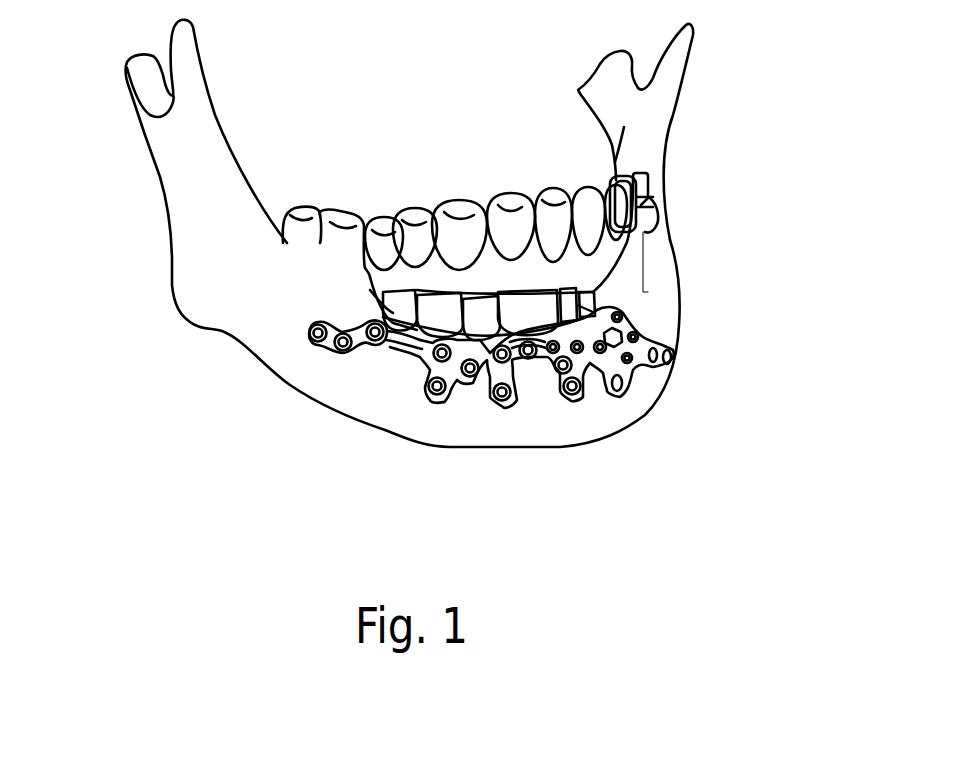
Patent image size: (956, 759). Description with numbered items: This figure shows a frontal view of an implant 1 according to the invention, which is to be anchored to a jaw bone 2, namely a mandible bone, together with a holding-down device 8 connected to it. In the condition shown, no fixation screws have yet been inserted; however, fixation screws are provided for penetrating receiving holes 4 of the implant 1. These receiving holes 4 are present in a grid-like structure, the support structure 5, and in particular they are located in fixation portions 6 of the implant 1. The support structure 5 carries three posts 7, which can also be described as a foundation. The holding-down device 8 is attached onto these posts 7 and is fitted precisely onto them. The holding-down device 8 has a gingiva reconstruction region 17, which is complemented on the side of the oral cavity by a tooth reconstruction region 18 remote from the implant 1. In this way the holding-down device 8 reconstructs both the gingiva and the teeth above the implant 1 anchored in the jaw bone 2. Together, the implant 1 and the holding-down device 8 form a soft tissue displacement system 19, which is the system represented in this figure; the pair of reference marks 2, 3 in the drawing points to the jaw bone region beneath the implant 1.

The implant 1 is at (548, 387).
The jaw bone 2 is at (483, 450).
The plate hole 3 is at (470, 397).
The receiving holes 4 is at (435, 387).
The support structure 5 is at (505, 368).
The fixation portions 6 is at (379, 349).
The posts 7 is at (473, 320).
The holding-down device 8 is at (653, 233).
The gingiva reconstruction region 17 is at (368, 275).
The tooth reconstruction region 18 is at (368, 227).
The soft tissue displacement system 19 is at (298, 263).